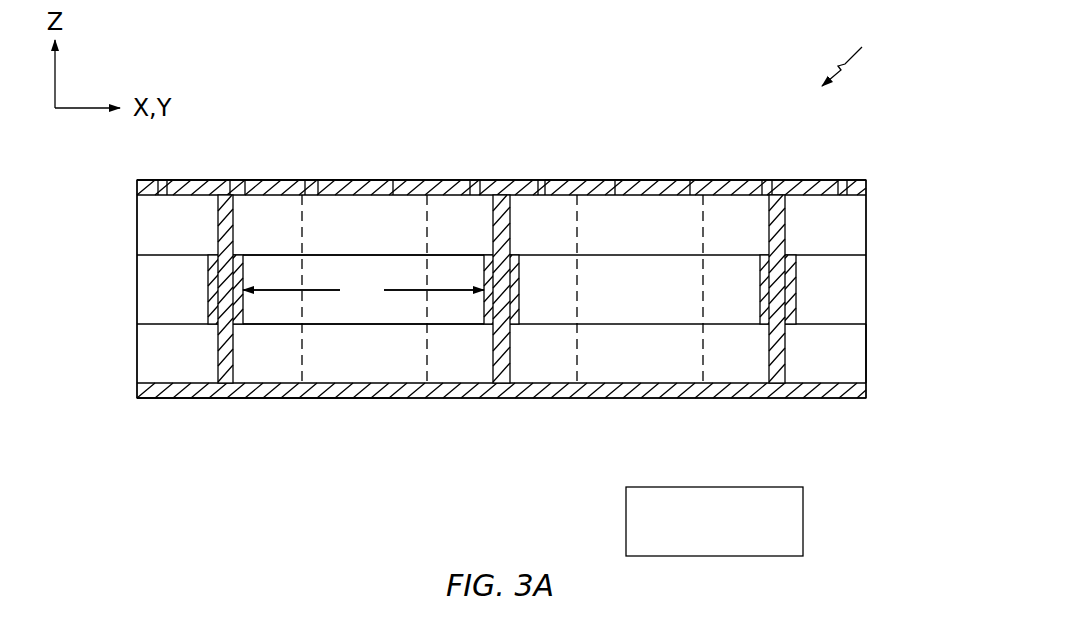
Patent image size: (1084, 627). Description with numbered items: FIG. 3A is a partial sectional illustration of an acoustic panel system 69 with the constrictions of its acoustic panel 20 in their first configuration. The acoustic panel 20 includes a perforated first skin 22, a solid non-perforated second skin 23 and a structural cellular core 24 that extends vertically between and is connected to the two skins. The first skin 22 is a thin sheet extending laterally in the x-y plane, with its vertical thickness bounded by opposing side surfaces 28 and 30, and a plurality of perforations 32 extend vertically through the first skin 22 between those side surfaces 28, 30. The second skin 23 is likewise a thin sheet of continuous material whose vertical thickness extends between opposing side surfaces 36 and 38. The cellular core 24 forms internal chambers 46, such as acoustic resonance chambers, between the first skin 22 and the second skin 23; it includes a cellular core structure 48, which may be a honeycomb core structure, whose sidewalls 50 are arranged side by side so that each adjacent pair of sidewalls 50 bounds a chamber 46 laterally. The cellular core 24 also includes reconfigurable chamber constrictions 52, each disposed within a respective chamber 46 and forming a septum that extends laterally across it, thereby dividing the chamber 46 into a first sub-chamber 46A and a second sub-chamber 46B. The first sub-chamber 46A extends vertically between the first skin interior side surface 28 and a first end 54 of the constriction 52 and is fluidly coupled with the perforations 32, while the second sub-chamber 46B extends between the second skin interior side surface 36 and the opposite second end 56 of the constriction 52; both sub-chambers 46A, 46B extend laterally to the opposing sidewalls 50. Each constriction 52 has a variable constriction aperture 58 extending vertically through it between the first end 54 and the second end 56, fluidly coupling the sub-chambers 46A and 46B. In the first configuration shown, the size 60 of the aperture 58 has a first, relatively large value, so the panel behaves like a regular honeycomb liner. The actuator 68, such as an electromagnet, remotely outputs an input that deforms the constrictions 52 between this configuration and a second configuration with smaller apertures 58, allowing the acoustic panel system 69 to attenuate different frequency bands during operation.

The acoustic panel 20 is at (858, 132).
The first skin 22 is at (128, 185).
The second skin 23 is at (128, 391).
The cellular core 24 is at (126, 197).
The first skin interior side surface 28 is at (866, 206).
The first skin side surface 30 is at (857, 180).
The perforations 32 is at (240, 180).
The second skin interior side surface 36 is at (868, 372).
The second skin side surface 38 is at (860, 400).
The chambers 46 is at (185, 365).
The first sub-chamber 46A is at (345, 237).
The second sub-chamber 46B is at (360, 367).
The cellular core structure 48 is at (486, 370).
The sidewalls 50 is at (235, 363).
The chamber constrictions 52 is at (203, 242).
The constriction first end 54 is at (440, 255).
The constriction second end 56 is at (270, 327).
The variable constriction aperture 58 is at (457, 270).
The aperture size 60 is at (363, 290).
The actuator 68 is at (803, 520).
The acoustic panel system 69 is at (857, 52).